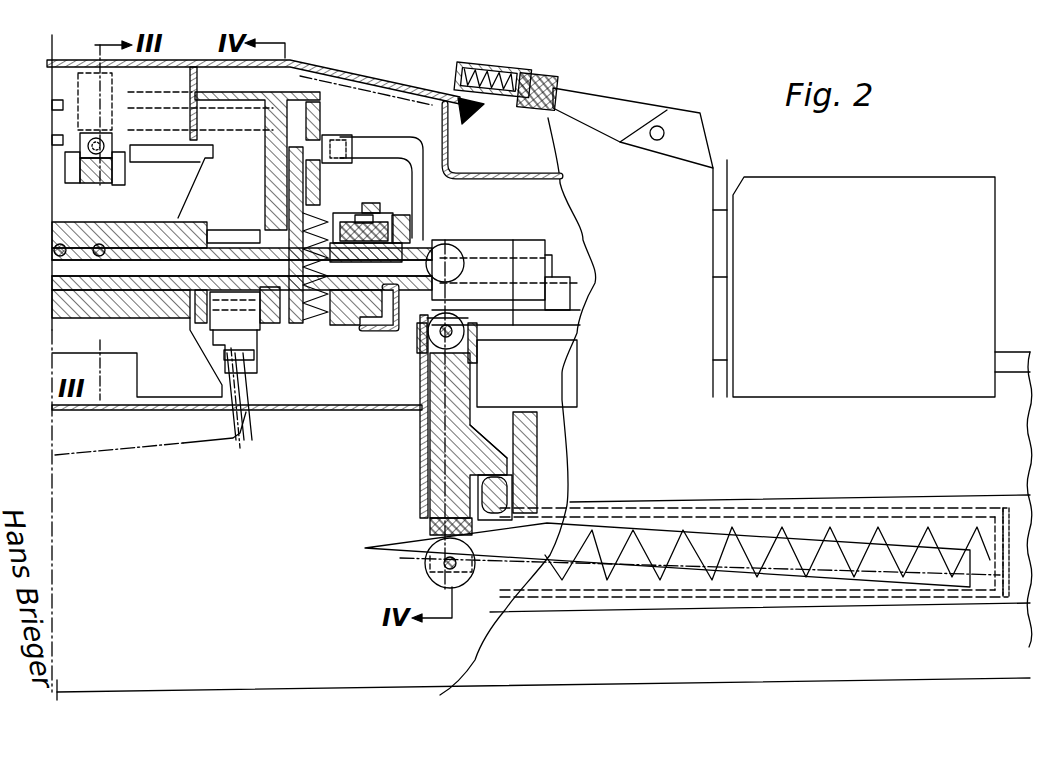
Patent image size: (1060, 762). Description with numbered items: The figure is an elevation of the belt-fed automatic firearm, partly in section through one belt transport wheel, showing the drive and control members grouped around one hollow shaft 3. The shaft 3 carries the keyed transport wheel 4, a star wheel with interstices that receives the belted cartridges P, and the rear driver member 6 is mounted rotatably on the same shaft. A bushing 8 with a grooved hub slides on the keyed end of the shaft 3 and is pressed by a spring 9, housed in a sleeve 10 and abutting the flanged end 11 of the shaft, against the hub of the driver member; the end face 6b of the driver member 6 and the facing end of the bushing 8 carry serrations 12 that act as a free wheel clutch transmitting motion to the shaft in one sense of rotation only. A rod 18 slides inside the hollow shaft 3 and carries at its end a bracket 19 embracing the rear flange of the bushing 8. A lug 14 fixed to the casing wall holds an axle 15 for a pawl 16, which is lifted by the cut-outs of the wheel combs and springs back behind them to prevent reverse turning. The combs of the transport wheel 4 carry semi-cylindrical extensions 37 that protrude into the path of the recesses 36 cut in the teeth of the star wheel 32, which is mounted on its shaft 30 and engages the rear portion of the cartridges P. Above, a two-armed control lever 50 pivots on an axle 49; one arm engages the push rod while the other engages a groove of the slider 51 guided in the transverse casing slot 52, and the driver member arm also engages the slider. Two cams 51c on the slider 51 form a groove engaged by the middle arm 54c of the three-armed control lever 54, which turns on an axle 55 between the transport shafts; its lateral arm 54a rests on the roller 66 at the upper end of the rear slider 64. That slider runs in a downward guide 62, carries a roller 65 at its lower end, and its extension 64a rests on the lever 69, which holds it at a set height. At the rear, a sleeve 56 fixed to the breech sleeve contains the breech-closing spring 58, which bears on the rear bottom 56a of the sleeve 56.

The hollow shaft 3 is at (72, 247).
The transport wheel 4 is at (86, 305).
The driver member 6 is at (290, 318).
The end face of driver member 6b is at (321, 183).
The bushing 8 is at (343, 310).
The spring 9 is at (348, 224).
The sleeve 10 is at (383, 226).
The flanged end of shaft 11 is at (396, 228).
The serrations 12 is at (313, 316).
The lug 14 is at (92, 172).
The axle 15 is at (113, 172).
The pawl 16 is at (116, 178).
The rod 18 is at (135, 268).
The bracket 19 is at (356, 217).
The shaft 30 is at (232, 306).
The star wheel 32 is at (257, 363).
The recess 36 is at (251, 350).
The semi-cylindrical extension 37 is at (213, 151).
The axle 49 is at (106, 76).
The two-armed control lever 50 is at (233, 112).
The slider 51 is at (318, 128).
The cam 51c is at (352, 136).
The slot 52 is at (288, 193).
The three-armed control lever 54 is at (481, 243).
The lateral arm 54a is at (566, 295).
The middle arm 54c is at (407, 143).
The axle 55 is at (553, 272).
The sleeve 56 is at (795, 509).
The rear bottom of sleeve 56a is at (1004, 528).
The breech-closing spring 58 is at (889, 532).
The guide 62 is at (420, 438).
The slider 64 is at (462, 467).
The extension of slider 64a is at (492, 456).
The roller 65 is at (426, 570).
The roller 66 is at (461, 338).
The lever 69 is at (493, 508).
The cartridges P is at (122, 452).